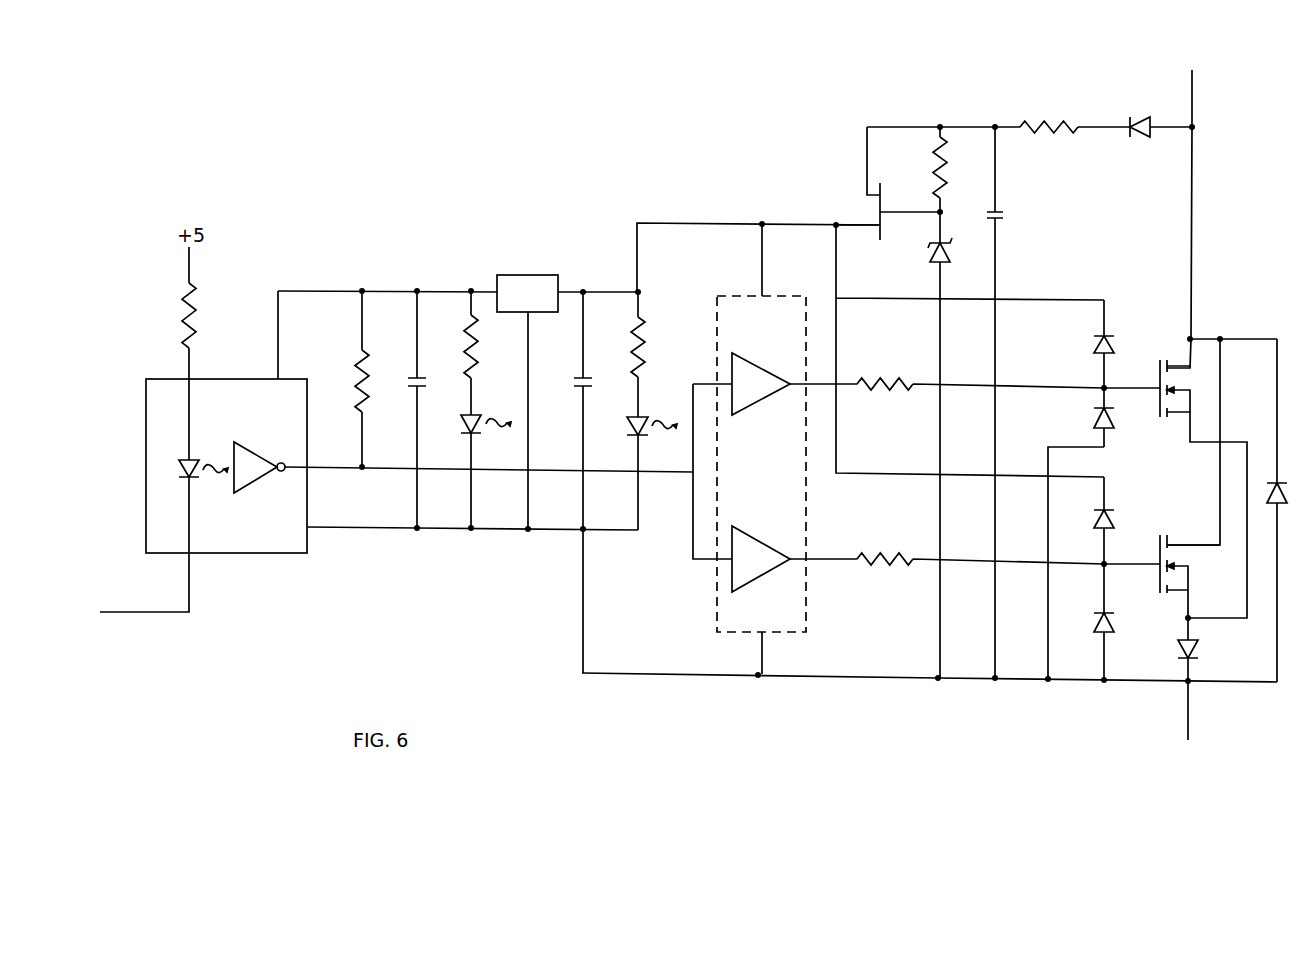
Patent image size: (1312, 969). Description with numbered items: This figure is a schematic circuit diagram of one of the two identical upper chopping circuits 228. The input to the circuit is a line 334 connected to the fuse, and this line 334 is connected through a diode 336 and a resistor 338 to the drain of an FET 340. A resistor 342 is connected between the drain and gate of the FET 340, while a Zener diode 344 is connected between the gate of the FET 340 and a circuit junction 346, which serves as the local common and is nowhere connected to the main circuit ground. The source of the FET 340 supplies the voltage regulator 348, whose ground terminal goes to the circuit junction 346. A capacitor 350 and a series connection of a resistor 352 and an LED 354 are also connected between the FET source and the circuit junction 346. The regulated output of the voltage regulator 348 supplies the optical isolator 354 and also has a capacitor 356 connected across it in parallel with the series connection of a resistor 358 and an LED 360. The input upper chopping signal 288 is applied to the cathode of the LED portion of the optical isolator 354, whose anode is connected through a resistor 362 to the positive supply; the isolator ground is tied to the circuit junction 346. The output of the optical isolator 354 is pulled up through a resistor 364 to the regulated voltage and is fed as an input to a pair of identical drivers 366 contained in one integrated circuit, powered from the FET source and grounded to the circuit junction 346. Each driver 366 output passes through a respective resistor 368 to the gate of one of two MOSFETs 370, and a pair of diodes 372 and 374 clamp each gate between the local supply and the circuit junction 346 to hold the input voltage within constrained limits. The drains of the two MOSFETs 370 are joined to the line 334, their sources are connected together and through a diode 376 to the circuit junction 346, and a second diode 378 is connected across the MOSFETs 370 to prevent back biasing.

The upper chopping circuit 228 is at (452, 536).
The input upper chopping signal 288 is at (143, 615).
The line 334 is at (1193, 103).
The diode 336 is at (1140, 118).
The resistor 338 is at (1047, 122).
The FET 340 is at (883, 190).
The resistor 342 is at (945, 152).
The Zener diode 344 is at (930, 260).
The circuit junction 346 is at (965, 680).
The voltage regulator 348 is at (545, 303).
The capacitor 350 is at (579, 375).
The resistor 352 is at (646, 330).
The optical isolator 354 is at (257, 545).
The capacitor 356 is at (413, 375).
The resistor 358 is at (480, 345).
The LED 360 is at (466, 471).
The resistor 362 is at (200, 307).
The resistor 364 is at (353, 363).
The drivers 366 is at (752, 407).
The resistor 368 is at (907, 392).
The MOSFETs 370 is at (1160, 362).
The diode 372 is at (1108, 512).
The diode 374 is at (1093, 343).
The diode 376 is at (1197, 647).
The second diode 378 is at (1270, 480).